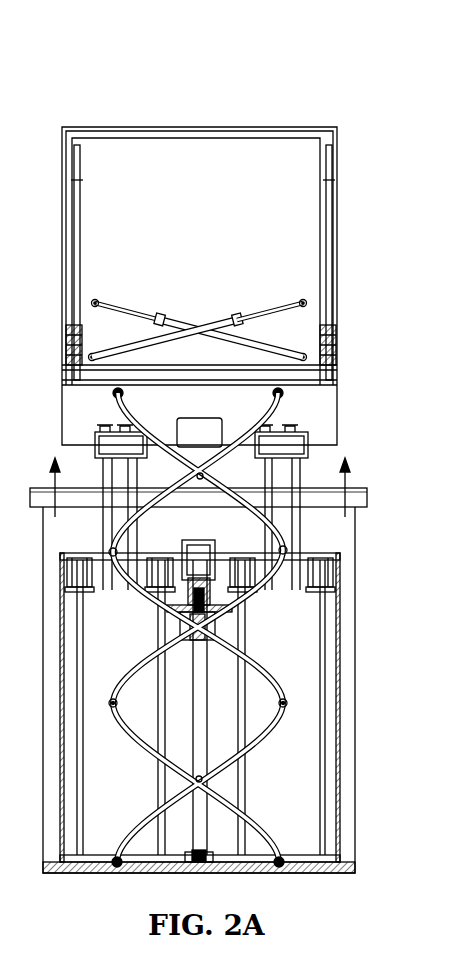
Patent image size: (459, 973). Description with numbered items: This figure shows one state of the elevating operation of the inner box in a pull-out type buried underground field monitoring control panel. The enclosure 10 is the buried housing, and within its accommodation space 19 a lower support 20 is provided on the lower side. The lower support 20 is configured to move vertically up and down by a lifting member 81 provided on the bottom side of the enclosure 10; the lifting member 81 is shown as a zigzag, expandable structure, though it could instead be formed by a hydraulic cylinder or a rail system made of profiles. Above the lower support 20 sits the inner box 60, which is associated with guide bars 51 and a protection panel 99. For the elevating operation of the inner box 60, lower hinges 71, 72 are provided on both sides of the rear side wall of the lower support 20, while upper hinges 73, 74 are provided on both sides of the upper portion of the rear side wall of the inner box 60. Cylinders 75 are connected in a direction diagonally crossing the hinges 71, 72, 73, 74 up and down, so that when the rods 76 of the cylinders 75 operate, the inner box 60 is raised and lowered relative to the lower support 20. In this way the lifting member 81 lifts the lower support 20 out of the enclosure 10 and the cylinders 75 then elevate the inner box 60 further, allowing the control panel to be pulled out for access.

The enclosure 10 is at (356, 663).
The accommodation space 19 is at (326, 533).
The lower support 20 is at (340, 428).
The guide bars 51 is at (322, 215).
The inner box 60 is at (340, 135).
The lower hinge 71 is at (70, 352).
The lower hinge 72 is at (325, 352).
The upper hinge 73 is at (97, 300).
The upper hinge 74 is at (303, 300).
The cylinders 75 is at (222, 320).
The rods 76 is at (263, 310).
The lifting member 81 is at (265, 826).
The protection panel 99 is at (76, 140).